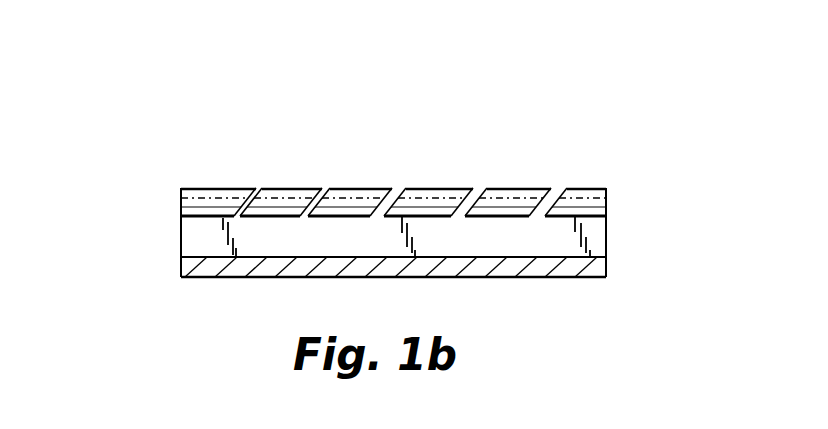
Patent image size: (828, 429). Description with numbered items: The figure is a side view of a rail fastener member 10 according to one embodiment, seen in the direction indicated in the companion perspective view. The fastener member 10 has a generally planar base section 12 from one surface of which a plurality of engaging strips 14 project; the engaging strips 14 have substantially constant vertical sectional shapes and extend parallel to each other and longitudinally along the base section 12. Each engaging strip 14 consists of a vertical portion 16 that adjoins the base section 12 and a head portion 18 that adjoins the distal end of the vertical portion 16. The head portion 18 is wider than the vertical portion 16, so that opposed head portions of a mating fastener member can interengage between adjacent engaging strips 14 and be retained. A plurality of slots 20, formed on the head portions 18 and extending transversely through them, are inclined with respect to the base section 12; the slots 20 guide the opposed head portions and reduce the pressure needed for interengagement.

The fastener member 10 is at (197, 88).
The base section 12 is at (196, 262).
The engaging strips 14 is at (588, 187).
The vertical portion 16 is at (598, 238).
The head portion 18 is at (300, 188).
The slots 20 is at (408, 188).